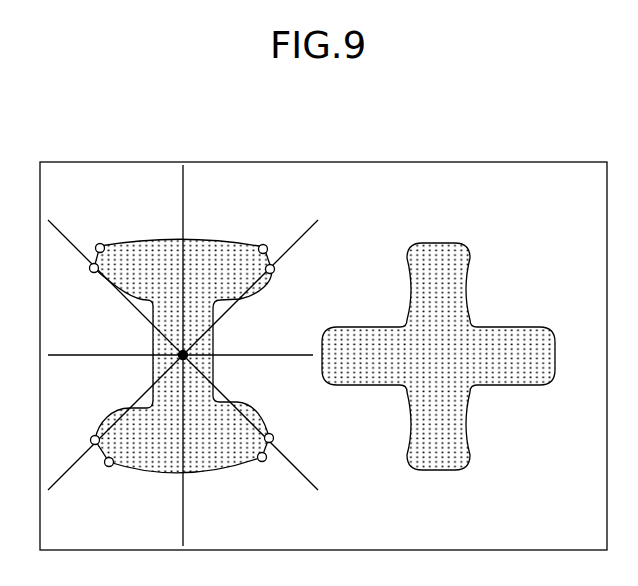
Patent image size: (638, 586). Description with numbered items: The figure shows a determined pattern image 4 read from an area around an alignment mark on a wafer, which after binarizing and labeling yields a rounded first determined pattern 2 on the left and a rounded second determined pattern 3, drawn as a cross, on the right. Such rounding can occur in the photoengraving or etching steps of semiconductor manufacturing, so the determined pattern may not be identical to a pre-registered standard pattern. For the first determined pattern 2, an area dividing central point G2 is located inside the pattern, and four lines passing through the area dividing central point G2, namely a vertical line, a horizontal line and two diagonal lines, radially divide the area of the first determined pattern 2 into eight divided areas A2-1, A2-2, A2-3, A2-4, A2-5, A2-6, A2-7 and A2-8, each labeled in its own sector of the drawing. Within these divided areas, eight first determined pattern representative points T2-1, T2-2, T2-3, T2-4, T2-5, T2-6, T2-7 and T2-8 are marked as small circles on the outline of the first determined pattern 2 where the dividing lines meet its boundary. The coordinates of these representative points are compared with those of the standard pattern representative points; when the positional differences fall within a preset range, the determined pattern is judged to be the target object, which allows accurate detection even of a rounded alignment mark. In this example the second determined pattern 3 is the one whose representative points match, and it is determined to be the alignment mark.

The first determined pattern 2 is at (202, 238).
The second determined pattern 3 is at (453, 243).
The determined pattern image 4 is at (305, 162).
The area dividing central point G2 is at (183, 355).
The first determined pattern representative point T2-1 is at (263, 249).
The first determined pattern representative point T2-2 is at (270, 269).
The first determined pattern representative point T2-3 is at (269, 438).
The first determined pattern representative point T2-4 is at (262, 457).
The first determined pattern representative point T2-5 is at (109, 462).
The first determined pattern representative point T2-6 is at (95, 440).
The first determined pattern representative point T2-7 is at (94, 268).
The first determined pattern representative point T2-8 is at (100, 248).
The divided area A2-1 is at (254, 185).
The divided area A2-2 is at (283, 339).
The divided area A2-3 is at (283, 374).
The divided area A2-4 is at (261, 532).
The divided area A2-5 is at (96, 532).
The divided area A2-6 is at (81, 372).
The divided area A2-7 is at (83, 339).
The divided area A2-8 is at (103, 185).